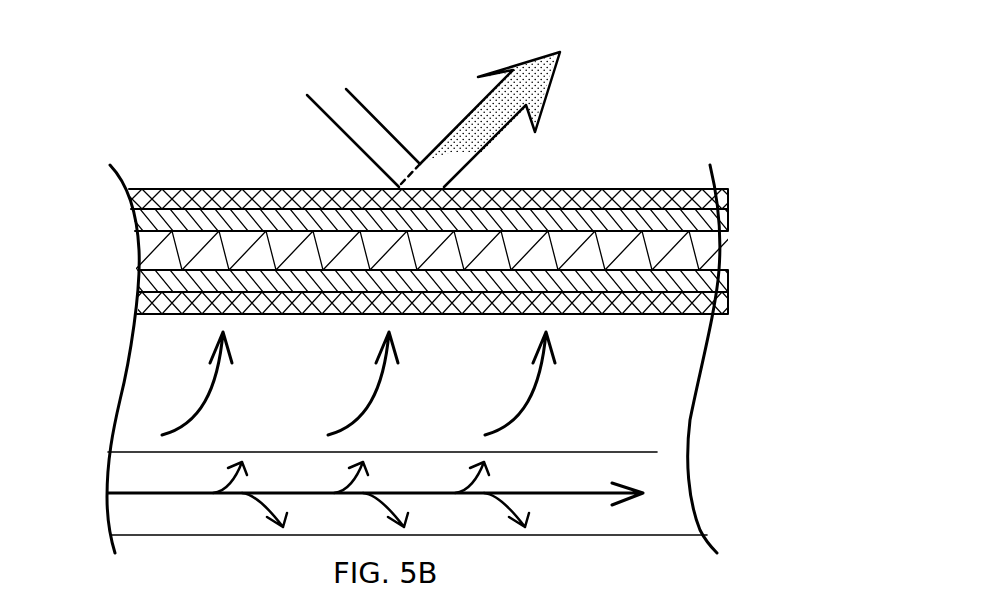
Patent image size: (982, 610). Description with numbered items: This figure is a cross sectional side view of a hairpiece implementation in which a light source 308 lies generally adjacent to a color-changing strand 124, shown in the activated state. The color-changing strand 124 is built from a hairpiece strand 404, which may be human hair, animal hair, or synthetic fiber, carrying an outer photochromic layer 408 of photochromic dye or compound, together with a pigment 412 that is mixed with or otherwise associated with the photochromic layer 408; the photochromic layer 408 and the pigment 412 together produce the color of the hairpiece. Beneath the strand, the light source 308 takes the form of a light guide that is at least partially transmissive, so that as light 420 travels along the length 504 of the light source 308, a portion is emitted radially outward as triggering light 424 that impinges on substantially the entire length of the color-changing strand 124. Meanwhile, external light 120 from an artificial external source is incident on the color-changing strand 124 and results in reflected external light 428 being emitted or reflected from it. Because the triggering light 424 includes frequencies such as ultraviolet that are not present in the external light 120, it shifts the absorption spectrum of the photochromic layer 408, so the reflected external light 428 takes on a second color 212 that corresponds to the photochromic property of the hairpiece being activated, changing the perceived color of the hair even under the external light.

The external light 120 is at (364, 112).
The second color 212 is at (542, 68).
The reflected external light 428 is at (548, 90).
The pigment 412 is at (716, 190).
The photochromic layer 408 is at (710, 225).
The hairpiece strand 404 is at (698, 255).
The color-changing strand 124 is at (150, 247).
The triggering light 424 is at (208, 398).
The length of the light source 504 is at (657, 450).
The light source 308 is at (117, 470).
The light traveling along the light source 420 is at (163, 495).